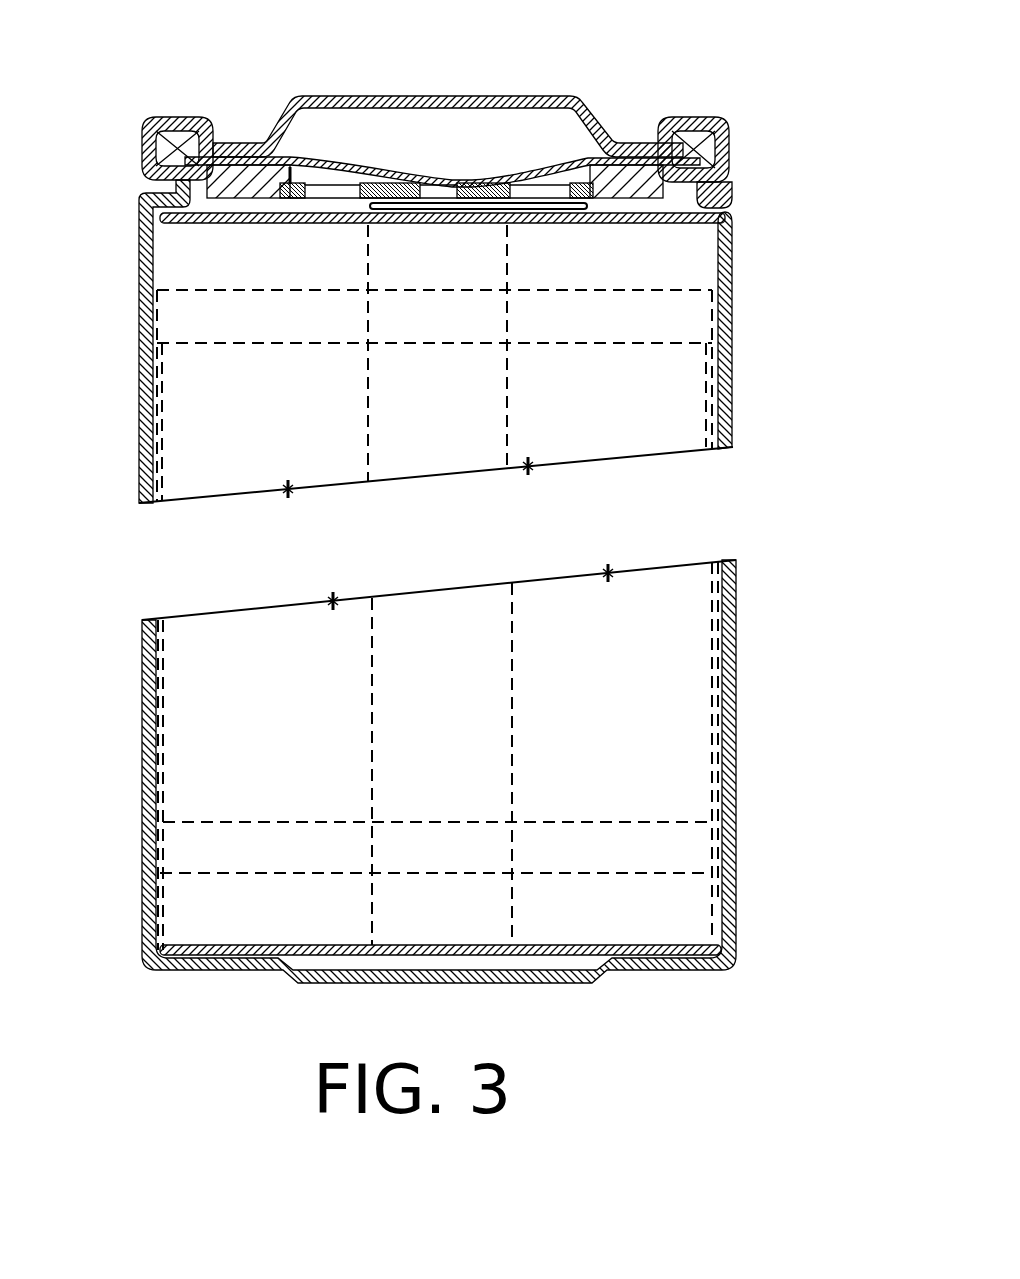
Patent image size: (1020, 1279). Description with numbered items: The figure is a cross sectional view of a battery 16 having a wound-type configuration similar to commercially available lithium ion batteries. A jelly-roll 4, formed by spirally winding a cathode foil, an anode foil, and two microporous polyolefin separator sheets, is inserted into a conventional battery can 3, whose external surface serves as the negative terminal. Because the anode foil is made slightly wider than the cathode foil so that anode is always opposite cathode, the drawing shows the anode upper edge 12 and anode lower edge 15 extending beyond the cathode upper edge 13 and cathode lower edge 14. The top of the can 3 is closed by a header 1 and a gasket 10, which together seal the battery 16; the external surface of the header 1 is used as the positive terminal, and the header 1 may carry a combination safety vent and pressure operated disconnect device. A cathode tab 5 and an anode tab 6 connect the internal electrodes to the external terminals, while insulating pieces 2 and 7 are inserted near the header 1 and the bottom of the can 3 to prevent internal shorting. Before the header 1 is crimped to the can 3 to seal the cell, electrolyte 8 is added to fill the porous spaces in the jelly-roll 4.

The header 1 is at (445, 96).
The insulating piece 2 is at (733, 215).
The battery can 3 is at (733, 332).
The jelly-roll 4 is at (675, 415).
The cathode tab 5 is at (368, 428).
The anode tab 6 is at (715, 925).
The insulating piece 7 is at (733, 950).
The electrolyte 8 is at (688, 648).
The gasket 10 is at (722, 140).
The anode upper edge 12 is at (193, 287).
The cathode upper edge 13 is at (567, 347).
The cathode lower edge 14 is at (220, 820).
The anode lower edge 15 is at (220, 877).
The battery 16 is at (156, 104).